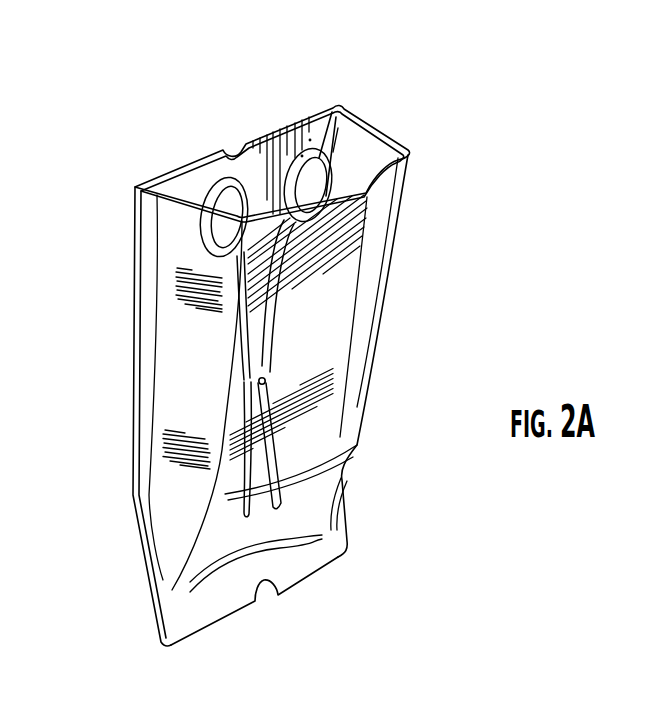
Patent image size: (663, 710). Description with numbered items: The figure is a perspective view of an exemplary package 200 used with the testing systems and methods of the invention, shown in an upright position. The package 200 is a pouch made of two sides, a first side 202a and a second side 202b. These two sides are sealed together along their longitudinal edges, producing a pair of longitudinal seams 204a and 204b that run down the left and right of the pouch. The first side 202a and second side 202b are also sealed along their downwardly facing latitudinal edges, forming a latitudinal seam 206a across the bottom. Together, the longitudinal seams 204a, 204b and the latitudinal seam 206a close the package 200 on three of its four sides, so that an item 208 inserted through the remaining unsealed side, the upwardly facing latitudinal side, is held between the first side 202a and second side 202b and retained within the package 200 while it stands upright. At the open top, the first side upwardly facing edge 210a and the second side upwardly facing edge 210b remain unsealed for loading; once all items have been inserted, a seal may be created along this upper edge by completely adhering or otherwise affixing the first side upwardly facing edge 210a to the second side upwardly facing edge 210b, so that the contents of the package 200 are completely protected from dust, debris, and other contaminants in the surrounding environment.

The package 200 is at (284, 327).
The first side 202a is at (227, 468).
The second side 202b is at (300, 118).
The longitudinal seam 204a is at (133, 247).
The longitudinal seam 204b is at (343, 103).
The latitudinal seam 206a is at (300, 572).
The item 208 is at (265, 378).
The first side upwardly facing edge 210a is at (380, 183).
The second side upwardly facing edge 210b is at (190, 156).